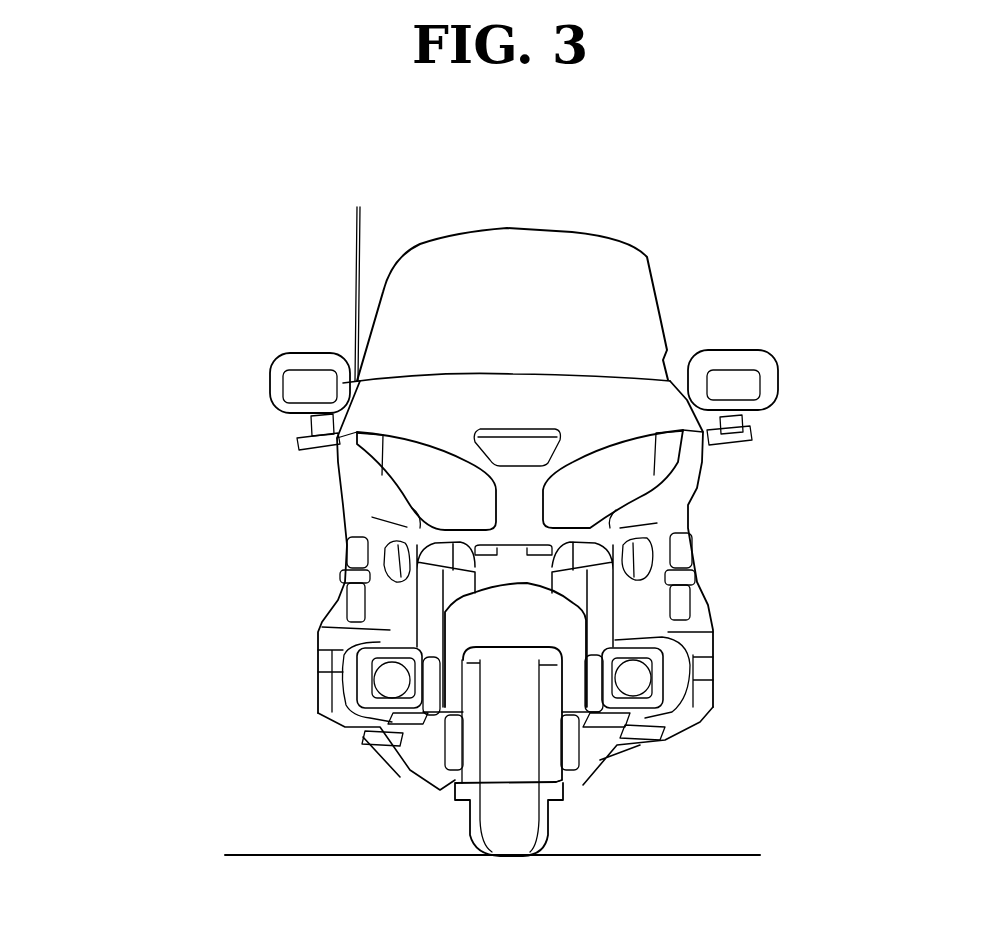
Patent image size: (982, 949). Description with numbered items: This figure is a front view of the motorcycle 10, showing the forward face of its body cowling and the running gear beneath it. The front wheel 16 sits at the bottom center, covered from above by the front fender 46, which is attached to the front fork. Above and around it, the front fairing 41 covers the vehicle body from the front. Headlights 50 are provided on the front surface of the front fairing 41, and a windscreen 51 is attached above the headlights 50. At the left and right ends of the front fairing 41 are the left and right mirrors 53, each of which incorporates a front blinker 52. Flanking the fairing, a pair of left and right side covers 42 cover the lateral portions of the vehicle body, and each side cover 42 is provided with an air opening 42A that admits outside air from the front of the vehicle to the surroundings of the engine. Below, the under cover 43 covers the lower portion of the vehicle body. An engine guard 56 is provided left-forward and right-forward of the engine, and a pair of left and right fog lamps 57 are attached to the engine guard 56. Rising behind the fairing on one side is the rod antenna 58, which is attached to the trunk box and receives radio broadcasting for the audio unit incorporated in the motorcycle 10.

The motorcycle 10 is at (138, 293).
The front wheel 16 is at (518, 852).
The front fairing 41 is at (640, 405).
The side covers 42 is at (697, 548).
The air openings 42A is at (688, 505).
The under cover 43 is at (410, 772).
The front fender 46 is at (435, 628).
The headlights 50 is at (593, 450).
The windscreen 51 is at (676, 268).
The front blinker 52 is at (750, 388).
The mirrors 53 is at (737, 348).
The engine guard 56 is at (660, 707).
The fog lamps 57 is at (633, 680).
The rod antenna 58 is at (352, 288).